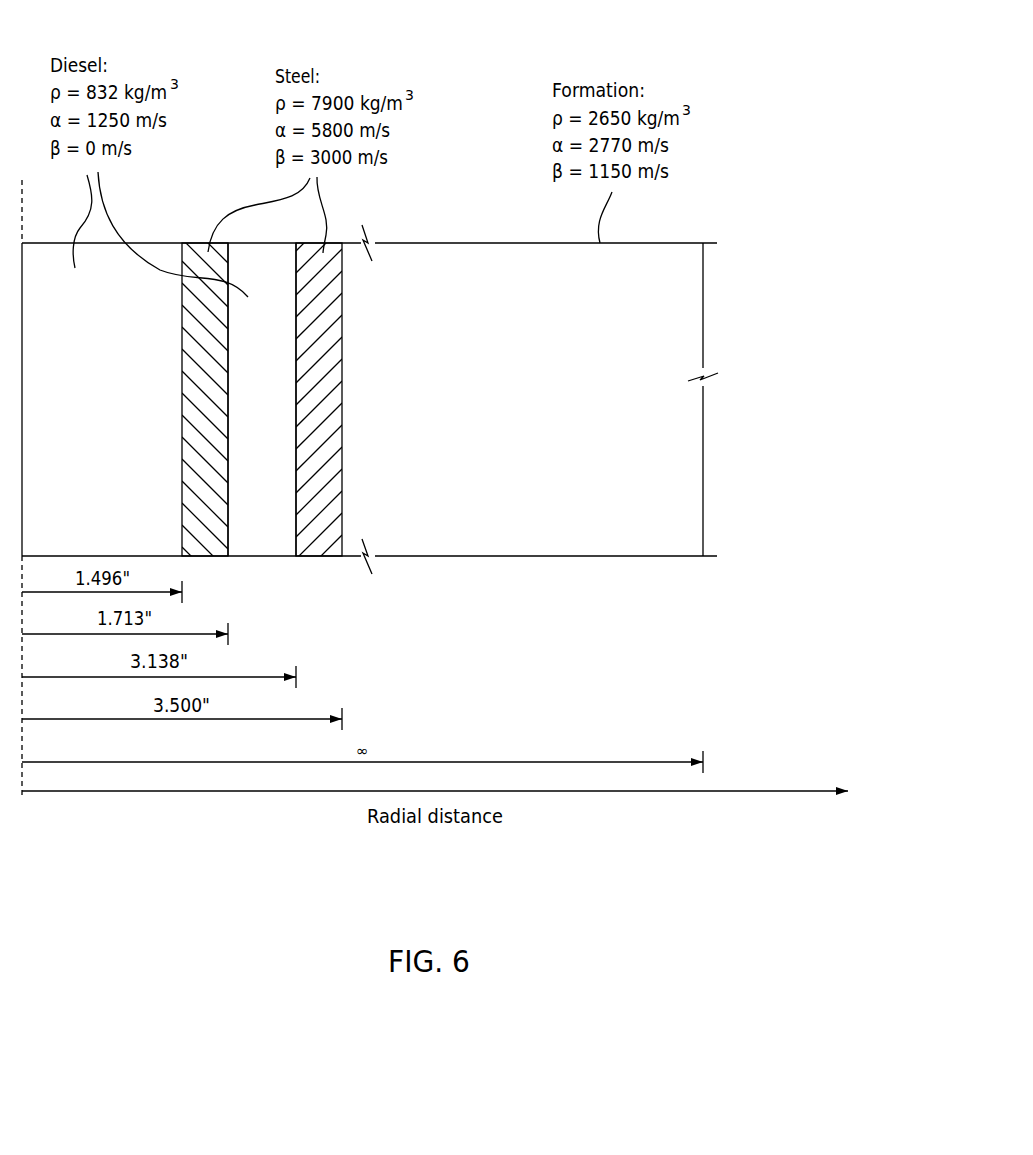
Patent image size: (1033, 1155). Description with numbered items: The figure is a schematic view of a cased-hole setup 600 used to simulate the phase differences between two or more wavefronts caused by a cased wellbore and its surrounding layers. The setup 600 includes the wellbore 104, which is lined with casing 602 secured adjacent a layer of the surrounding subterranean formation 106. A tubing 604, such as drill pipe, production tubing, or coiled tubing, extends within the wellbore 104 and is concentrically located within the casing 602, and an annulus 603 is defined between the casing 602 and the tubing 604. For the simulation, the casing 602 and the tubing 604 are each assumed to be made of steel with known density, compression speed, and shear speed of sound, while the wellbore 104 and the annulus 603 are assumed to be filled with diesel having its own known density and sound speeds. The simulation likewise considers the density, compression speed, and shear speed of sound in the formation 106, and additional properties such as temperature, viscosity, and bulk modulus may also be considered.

The cased-hole setup 600 is at (526, 36).
The wellbore 104 is at (109, 357).
The annulus 603 is at (278, 354).
The tubing 604 is at (192, 457).
The casing 602 is at (342, 318).
The subterranean formation 106 is at (549, 413).